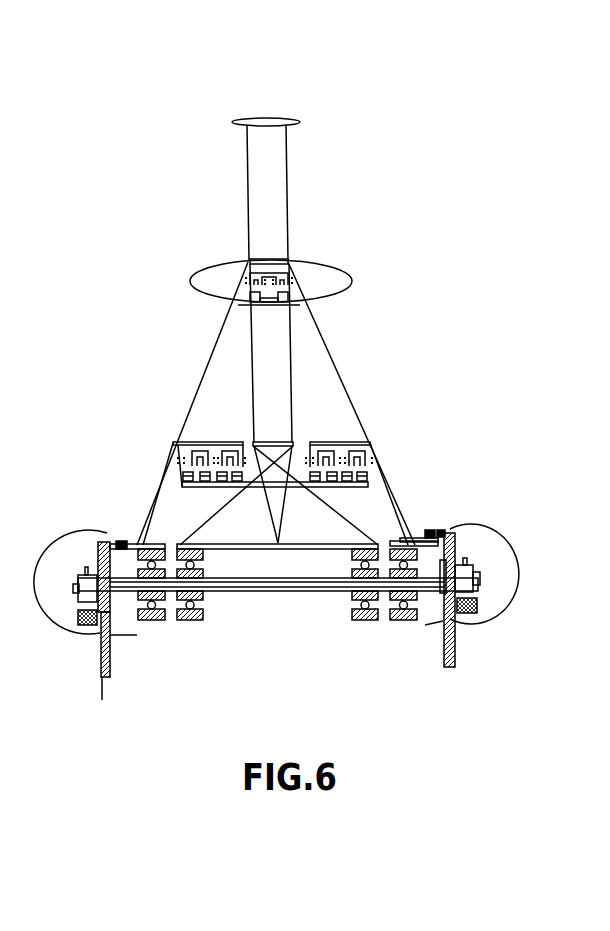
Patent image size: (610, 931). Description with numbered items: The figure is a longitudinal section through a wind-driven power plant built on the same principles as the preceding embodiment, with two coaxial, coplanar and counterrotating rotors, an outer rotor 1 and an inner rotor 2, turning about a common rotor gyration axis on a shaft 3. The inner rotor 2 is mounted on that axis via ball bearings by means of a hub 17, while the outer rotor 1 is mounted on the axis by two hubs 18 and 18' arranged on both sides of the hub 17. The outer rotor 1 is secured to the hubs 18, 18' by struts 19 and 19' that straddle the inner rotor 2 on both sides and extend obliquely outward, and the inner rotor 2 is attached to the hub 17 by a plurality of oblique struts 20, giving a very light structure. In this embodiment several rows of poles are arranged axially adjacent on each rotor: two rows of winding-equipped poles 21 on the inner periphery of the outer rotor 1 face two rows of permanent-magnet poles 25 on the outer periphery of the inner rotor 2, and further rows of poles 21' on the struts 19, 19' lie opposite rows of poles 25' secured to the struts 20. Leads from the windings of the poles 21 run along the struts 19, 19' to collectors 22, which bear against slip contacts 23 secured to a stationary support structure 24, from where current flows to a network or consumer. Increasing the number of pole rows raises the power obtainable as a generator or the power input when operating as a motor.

The outer rotor 1 is at (268, 198).
The inner rotor 2 is at (272, 370).
The shaft 3 is at (468, 558).
The hub 17 is at (243, 543).
The hub 18 is at (86, 592).
The hub 18' is at (429, 506).
The strut 19 is at (172, 403).
The strut 19' is at (383, 403).
The oblique struts 20 is at (283, 510).
The poles 21 is at (273, 240).
The poles 21' is at (296, 478).
The collectors 22 is at (432, 530).
The slip contacts 23 is at (440, 519).
The support structure 24 is at (455, 637).
The poles 25 is at (275, 291).
The poles 25' is at (285, 506).